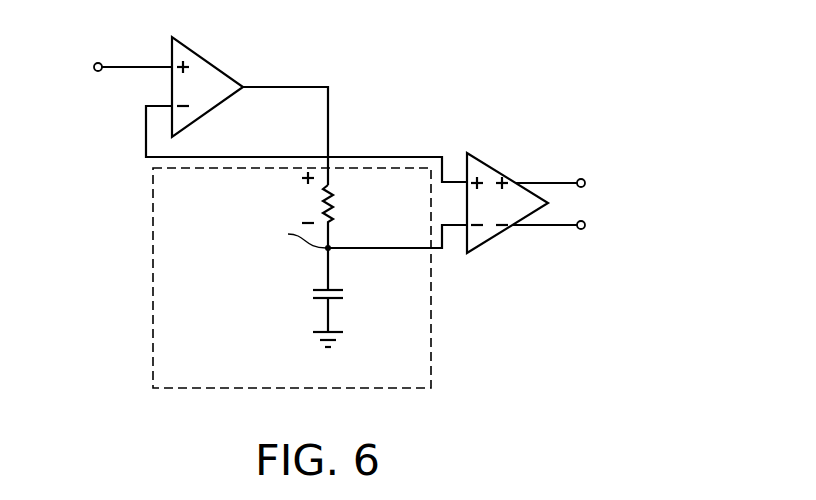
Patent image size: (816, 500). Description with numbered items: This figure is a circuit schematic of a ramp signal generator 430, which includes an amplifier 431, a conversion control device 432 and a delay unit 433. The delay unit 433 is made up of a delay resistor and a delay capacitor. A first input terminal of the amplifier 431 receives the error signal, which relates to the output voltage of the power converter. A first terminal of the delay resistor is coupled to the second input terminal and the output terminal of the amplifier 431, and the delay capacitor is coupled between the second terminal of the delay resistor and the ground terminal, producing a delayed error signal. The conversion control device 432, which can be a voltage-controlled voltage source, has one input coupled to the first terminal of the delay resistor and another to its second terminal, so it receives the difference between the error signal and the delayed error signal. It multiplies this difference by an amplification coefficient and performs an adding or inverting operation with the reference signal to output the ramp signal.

The ramp signal generator 430 is at (379, 224).
The amplifier 431 is at (215, 63).
The conversion control device 432 is at (493, 165).
The delay unit 433 is at (150, 235).